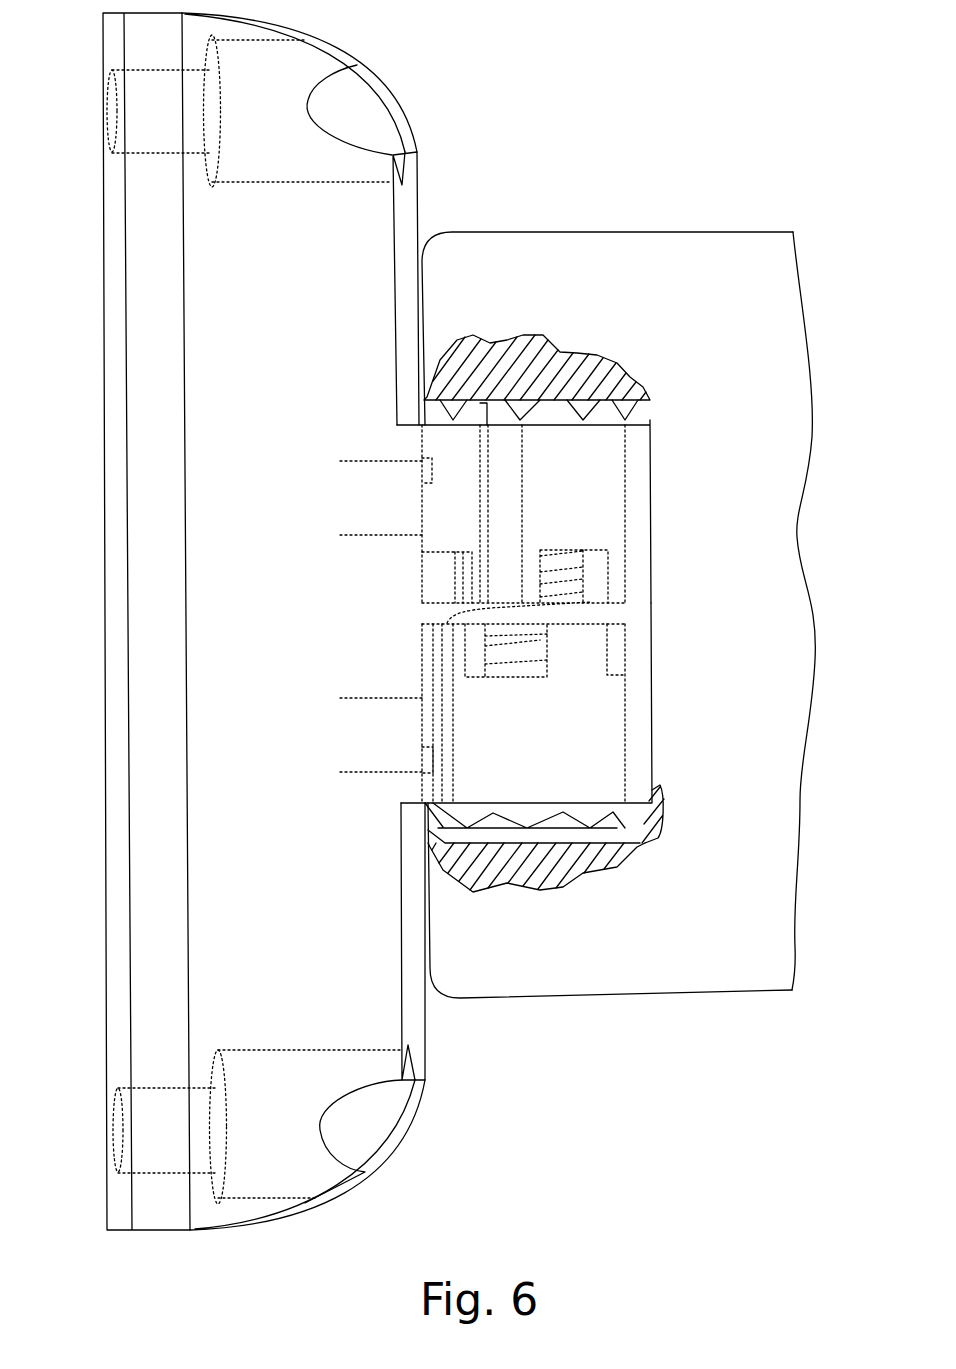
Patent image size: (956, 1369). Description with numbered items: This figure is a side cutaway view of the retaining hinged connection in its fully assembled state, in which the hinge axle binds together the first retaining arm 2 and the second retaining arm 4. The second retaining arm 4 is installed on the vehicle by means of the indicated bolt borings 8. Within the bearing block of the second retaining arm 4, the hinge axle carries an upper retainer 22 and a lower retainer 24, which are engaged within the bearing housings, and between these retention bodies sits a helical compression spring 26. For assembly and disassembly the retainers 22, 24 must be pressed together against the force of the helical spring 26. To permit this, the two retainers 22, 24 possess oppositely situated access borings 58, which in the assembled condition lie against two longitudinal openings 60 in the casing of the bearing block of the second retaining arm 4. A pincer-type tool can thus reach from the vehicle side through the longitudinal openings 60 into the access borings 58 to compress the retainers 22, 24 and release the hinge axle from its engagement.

The first retaining arm 2 is at (764, 605).
The second retaining arm 4 is at (226, 605).
The bolt borings 8 is at (363, 115).
The upper retainer 22 is at (578, 475).
The lower retainer 24 is at (582, 750).
The helical compression spring 26 is at (568, 605).
The access borings 58 is at (418, 468).
The longitudinal openings 60 is at (362, 494).